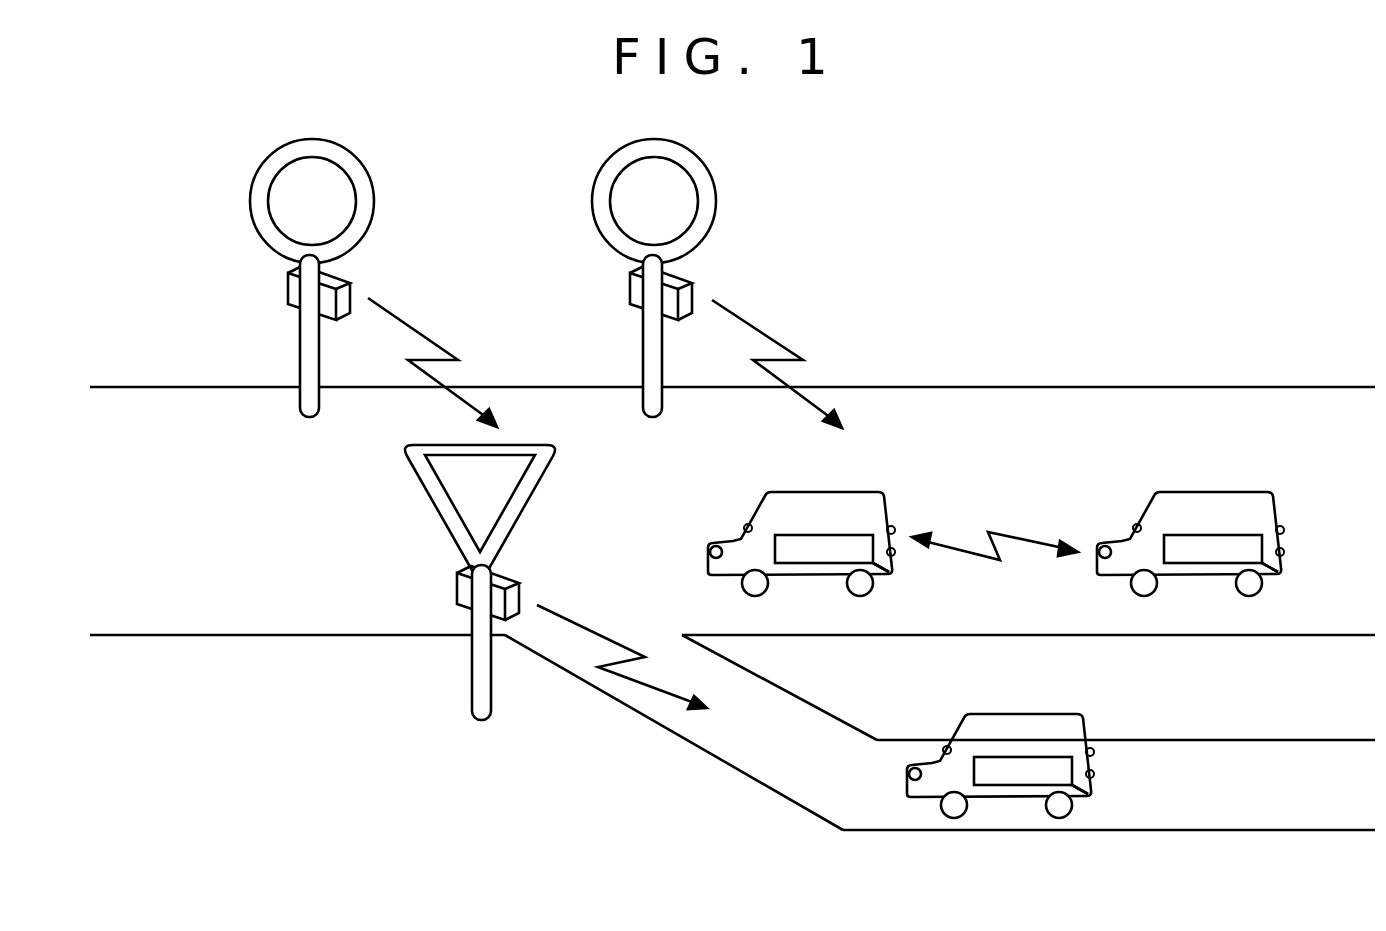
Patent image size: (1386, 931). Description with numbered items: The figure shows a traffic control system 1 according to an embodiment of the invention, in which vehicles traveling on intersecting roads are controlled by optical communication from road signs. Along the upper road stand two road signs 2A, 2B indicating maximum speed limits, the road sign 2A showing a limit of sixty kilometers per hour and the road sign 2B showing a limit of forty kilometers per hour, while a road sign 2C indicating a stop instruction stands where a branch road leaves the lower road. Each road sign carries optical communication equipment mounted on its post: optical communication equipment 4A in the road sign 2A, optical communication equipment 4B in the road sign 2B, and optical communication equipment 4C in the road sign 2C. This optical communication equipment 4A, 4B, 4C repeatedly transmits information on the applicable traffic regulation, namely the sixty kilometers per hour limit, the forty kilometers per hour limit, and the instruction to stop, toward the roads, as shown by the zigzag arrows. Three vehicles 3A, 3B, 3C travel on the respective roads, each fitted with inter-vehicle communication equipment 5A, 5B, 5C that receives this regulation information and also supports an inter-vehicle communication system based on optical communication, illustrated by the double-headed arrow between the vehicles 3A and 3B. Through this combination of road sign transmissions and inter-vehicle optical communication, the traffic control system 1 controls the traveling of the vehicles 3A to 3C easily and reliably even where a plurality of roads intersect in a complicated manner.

The traffic control system 1 is at (1172, 220).
The road sign 2A is at (717, 198).
The road sign 2B is at (373, 198).
The road sign 2C is at (422, 483).
The vehicle 3A is at (827, 492).
The vehicle 3B is at (1217, 490).
The vehicle 3C is at (1026, 714).
The optical communication equipment 4A is at (630, 290).
The optical communication equipment 4B is at (288, 290).
The optical communication equipment 4C is at (458, 583).
The inter-vehicle communication equipment 5A is at (900, 563).
The inter-vehicle communication equipment 5B is at (1289, 563).
The inter-vehicle communication equipment 5C is at (1099, 785).